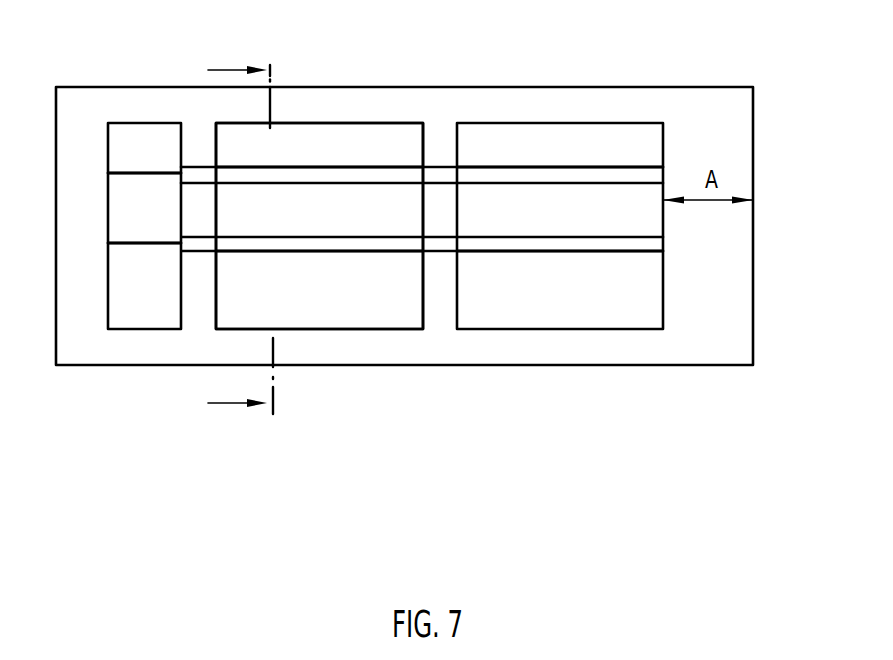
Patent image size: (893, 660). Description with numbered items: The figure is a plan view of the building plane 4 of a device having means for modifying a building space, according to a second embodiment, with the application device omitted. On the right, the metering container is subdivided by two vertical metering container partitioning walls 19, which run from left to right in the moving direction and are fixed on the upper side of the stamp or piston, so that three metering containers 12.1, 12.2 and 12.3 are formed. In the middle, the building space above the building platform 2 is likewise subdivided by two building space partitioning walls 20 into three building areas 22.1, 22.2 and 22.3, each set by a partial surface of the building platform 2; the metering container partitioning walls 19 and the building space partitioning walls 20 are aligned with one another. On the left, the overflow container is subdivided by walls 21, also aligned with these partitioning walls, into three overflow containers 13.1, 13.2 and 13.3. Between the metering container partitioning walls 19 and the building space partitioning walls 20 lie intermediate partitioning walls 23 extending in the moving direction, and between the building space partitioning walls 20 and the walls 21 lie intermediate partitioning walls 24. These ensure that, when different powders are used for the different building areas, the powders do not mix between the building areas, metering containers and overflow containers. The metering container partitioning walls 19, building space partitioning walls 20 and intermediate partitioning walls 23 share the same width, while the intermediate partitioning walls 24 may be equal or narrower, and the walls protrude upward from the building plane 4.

The building platform 2 is at (392, 331).
The building plane 4 is at (745, 355).
The metering container 12.1 is at (508, 143).
The metering container 12.2 is at (585, 197).
The metering container 12.3 is at (575, 303).
The overflow container 13.1 is at (147, 140).
The overflow container 13.2 is at (137, 223).
The overflow container 13.3 is at (162, 303).
The metering container partitioning wall 19 is at (642, 180).
The building space partitioning wall 20 is at (400, 173).
The wall 21 is at (157, 242).
The building area 22.1 is at (308, 147).
The building area 22.2 is at (365, 202).
The building area 22.3 is at (362, 300).
The intermediate partitioning wall 23 is at (445, 178).
The intermediate partitioning wall 24 is at (200, 178).